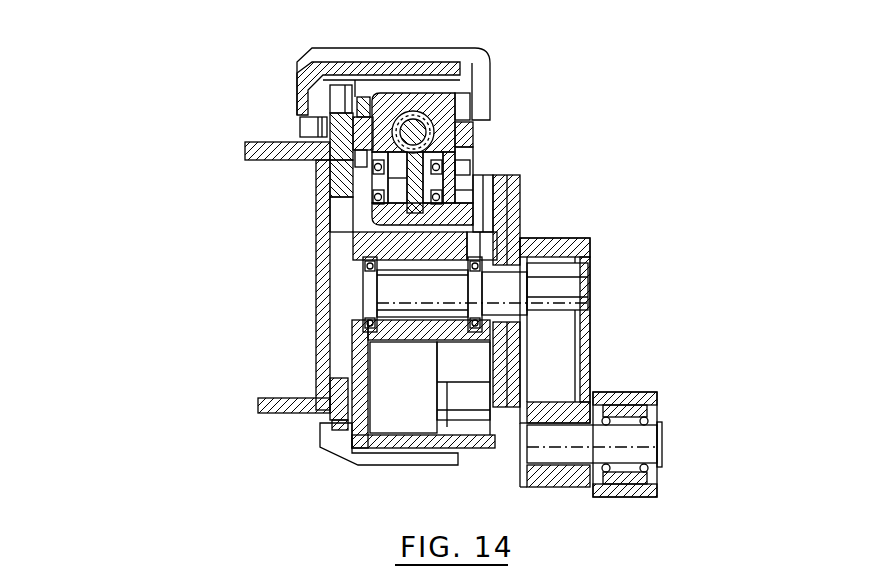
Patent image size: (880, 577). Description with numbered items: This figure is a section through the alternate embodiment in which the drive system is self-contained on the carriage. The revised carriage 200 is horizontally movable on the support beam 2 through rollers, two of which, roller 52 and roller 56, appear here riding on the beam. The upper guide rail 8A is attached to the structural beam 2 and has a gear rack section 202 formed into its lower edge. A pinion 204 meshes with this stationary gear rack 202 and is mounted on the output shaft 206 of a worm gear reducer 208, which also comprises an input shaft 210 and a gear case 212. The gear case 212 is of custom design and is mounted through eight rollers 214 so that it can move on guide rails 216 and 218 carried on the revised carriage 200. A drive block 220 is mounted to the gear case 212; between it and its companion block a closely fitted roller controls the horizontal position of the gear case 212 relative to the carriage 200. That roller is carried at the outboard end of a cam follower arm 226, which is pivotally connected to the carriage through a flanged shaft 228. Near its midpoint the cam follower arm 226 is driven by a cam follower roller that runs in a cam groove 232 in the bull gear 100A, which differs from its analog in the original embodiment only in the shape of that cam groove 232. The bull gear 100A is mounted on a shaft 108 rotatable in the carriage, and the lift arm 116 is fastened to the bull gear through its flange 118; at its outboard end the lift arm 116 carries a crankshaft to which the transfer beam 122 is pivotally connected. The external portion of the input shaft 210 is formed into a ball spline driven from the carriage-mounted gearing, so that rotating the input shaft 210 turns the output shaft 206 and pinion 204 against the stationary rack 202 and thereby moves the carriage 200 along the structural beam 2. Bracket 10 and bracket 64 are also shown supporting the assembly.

The support beam 2 is at (275, 413).
The upper guide rail 8A is at (334, 166).
The mounting bracket 10 is at (338, 378).
The roller 52 is at (337, 98).
The roller 56 is at (310, 126).
The lower bracket 64 is at (347, 460).
The bull gear 100A is at (510, 413).
The shaft 108 is at (588, 304).
The lift arm 116 is at (590, 285).
The flange 118 is at (588, 257).
The transfer beam 122 is at (642, 393).
The revised carriage 200 is at (490, 62).
The worm gear reducer 208 is at (443, 90).
The input shaft 210 is at (412, 128).
The gear case 212 is at (488, 188).
The rollers 214 is at (364, 100).
The guide rail 216 is at (322, 150).
The guide rail 218 is at (474, 137).
The drive block 220 is at (457, 217).
The gear rack section 202 is at (358, 152).
The pinion 204 is at (340, 222).
The output shaft 206 is at (349, 208).
The cam follower arm 226 is at (475, 423).
The flanged shaft 228 is at (443, 430).
The cam groove 232 is at (506, 213).